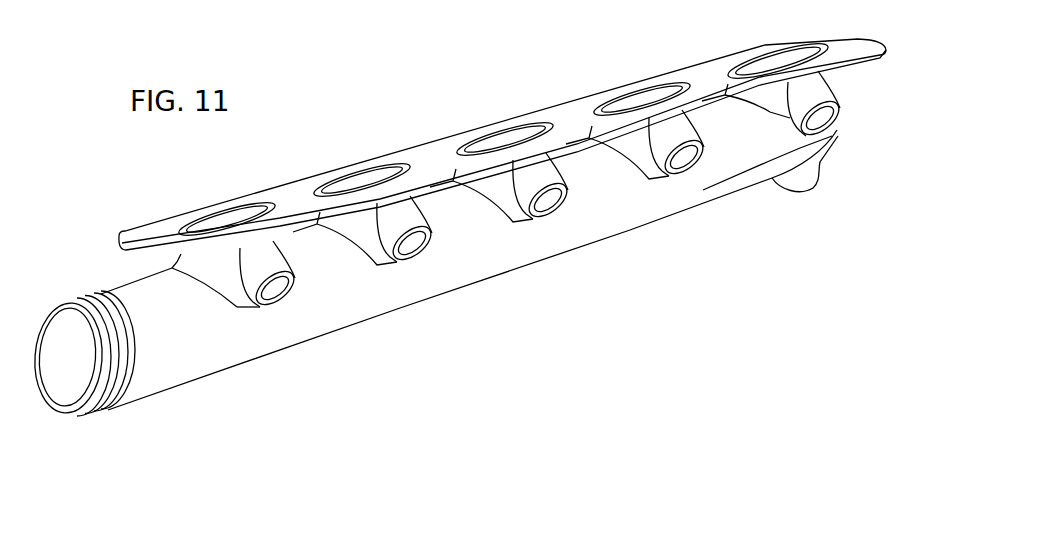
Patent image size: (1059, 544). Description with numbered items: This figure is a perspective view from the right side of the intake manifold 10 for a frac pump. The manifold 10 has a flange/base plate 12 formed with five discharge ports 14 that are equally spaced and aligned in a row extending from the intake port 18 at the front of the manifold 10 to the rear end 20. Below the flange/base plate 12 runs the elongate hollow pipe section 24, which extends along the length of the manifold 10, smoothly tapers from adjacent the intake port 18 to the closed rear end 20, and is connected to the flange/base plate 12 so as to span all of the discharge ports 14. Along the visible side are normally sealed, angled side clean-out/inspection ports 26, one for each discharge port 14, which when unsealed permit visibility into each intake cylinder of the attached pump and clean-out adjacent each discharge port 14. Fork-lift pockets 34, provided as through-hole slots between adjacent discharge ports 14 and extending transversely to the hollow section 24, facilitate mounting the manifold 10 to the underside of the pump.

The intake manifold 10 is at (108, 291).
The flange/base plate 12 is at (407, 158).
The discharge ports 14 is at (648, 100).
The intake port 18 is at (55, 392).
The rear end 20 is at (838, 134).
The elongate hollow pipe section 24 is at (215, 350).
The side clean-out/inspection ports 26 is at (285, 297).
The fork-lift pockets 34 is at (578, 152).